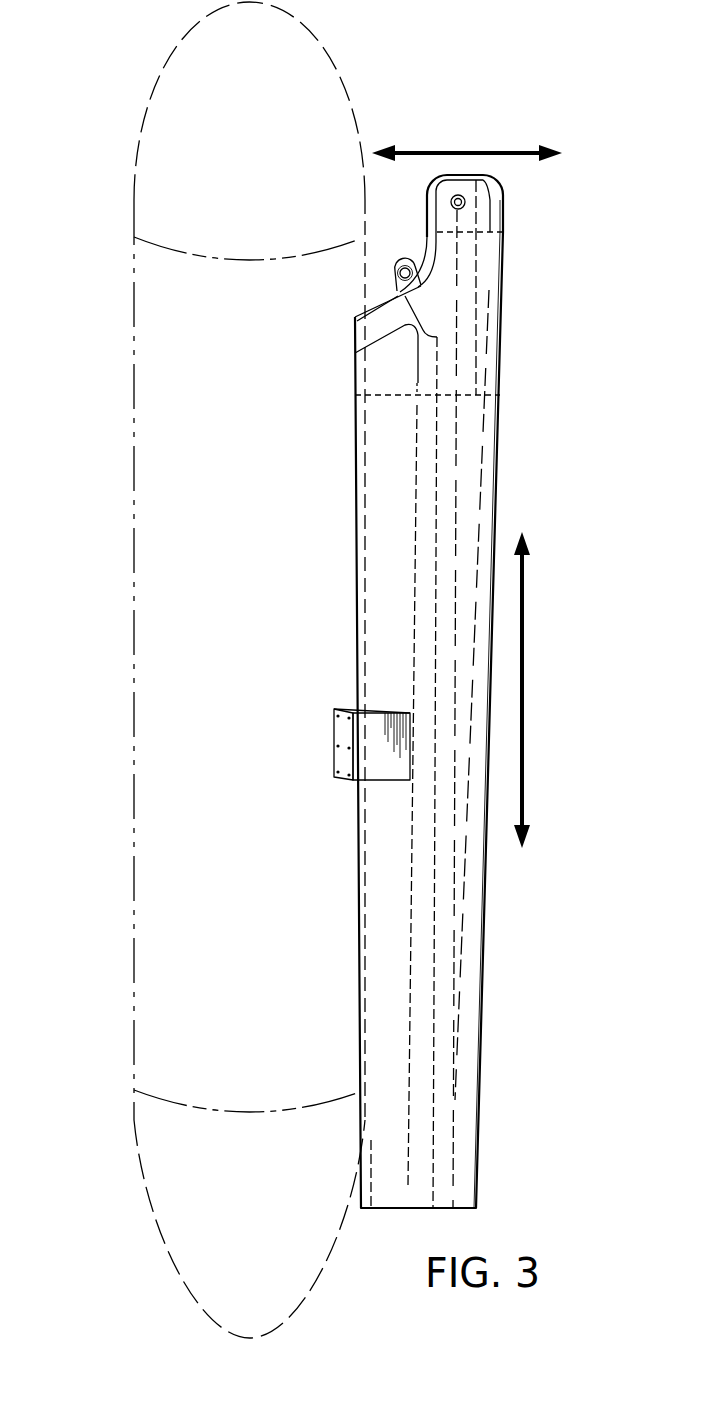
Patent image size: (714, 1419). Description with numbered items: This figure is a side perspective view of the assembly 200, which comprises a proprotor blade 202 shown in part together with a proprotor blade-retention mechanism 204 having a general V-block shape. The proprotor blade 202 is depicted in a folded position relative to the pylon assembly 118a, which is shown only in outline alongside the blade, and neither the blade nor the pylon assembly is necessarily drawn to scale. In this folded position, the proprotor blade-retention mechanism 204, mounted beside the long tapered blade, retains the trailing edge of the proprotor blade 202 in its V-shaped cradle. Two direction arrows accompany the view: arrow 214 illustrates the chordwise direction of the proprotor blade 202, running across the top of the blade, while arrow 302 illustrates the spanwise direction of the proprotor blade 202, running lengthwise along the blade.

The pylon assembly 118a is at (133, 333).
The assembly 200 is at (415, 613).
The proprotor blade 202 is at (355, 452).
The proprotor blade-retention mechanism 204 is at (318, 746).
The arrow 214 is at (467, 150).
The arrow 302 is at (524, 690).